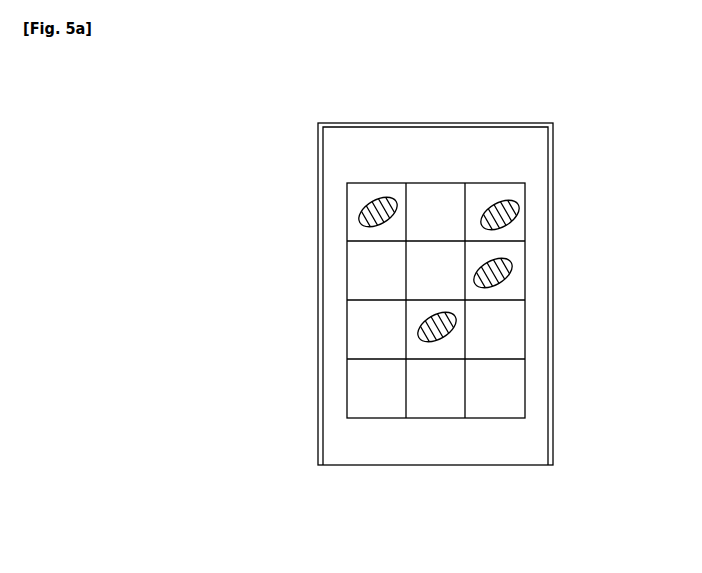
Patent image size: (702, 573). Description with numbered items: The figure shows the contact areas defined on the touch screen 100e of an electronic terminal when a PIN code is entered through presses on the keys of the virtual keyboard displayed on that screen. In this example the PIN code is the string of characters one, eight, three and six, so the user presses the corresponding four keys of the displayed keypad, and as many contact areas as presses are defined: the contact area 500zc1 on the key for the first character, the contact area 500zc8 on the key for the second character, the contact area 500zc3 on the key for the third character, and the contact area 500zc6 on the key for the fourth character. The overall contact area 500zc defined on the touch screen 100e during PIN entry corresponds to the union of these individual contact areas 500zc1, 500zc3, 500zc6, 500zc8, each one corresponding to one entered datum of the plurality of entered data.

The touch screen 100e is at (440, 123).
The contact area 500zc is at (378, 224).
The contact area 500zc1 is at (380, 197).
The contact area 500zc3 is at (509, 199).
The contact area 500zc6 is at (500, 286).
The contact area 500zc8 is at (430, 340).